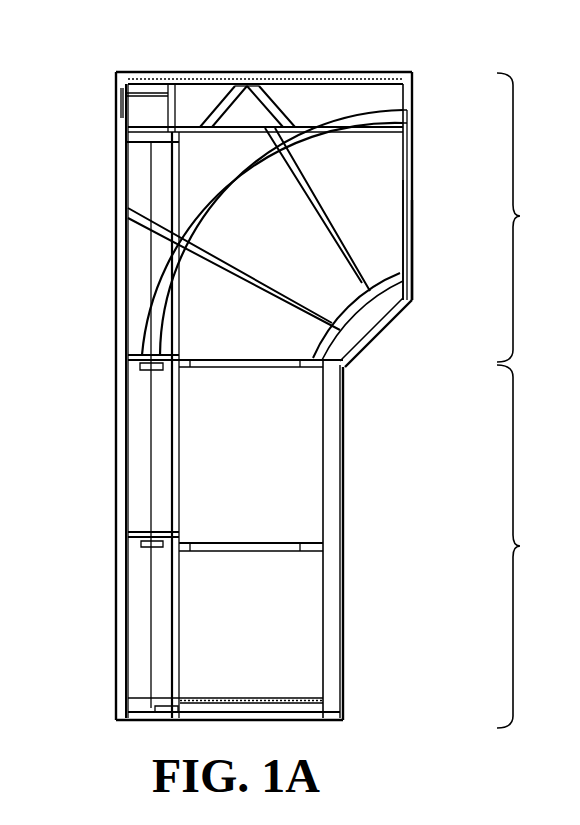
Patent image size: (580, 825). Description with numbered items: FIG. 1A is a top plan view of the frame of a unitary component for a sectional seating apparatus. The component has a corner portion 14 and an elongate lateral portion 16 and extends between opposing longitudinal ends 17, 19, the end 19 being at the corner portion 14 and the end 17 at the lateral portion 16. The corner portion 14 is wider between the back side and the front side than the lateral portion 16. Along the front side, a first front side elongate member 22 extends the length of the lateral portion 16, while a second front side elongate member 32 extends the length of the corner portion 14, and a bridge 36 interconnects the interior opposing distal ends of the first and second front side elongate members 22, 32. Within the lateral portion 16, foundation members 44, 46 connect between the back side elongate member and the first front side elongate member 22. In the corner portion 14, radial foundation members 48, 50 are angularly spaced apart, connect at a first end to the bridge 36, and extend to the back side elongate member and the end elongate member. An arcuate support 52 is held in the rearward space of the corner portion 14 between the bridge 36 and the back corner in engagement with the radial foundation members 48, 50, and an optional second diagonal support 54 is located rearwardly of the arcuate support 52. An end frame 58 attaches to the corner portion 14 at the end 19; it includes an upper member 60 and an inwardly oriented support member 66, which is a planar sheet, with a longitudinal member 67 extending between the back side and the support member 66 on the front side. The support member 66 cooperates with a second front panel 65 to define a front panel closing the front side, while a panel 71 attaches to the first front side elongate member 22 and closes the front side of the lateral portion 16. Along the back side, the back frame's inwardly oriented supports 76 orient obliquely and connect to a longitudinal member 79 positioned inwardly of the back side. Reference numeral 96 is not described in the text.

The corner portion 14 is at (526, 217).
The elongate lateral portion 16 is at (527, 546).
The longitudinal end 17 is at (155, 722).
The longitudinal end 19 is at (140, 72).
The first front side elongate member 22 is at (327, 527).
The second front side elongate member 32 is at (398, 219).
The bridge 36 is at (372, 332).
The foundation member 44 is at (280, 555).
The foundation member 46 is at (268, 368).
The radial foundation member 48 is at (273, 297).
The radial foundation member 50 is at (327, 232).
The arcuate support 52 is at (228, 176).
The second diagonal support 54 is at (238, 95).
The end frame 58 is at (322, 73).
The upper member 60 is at (120, 473).
The second front panel 65 is at (410, 240).
The support member 66 is at (413, 117).
The longitudinal member 67 is at (380, 153).
The panel 71 is at (347, 568).
The inwardly oriented support 76 is at (143, 531).
The longitudinal member 79 is at (160, 467).
The bottom rail end 96 is at (308, 710).